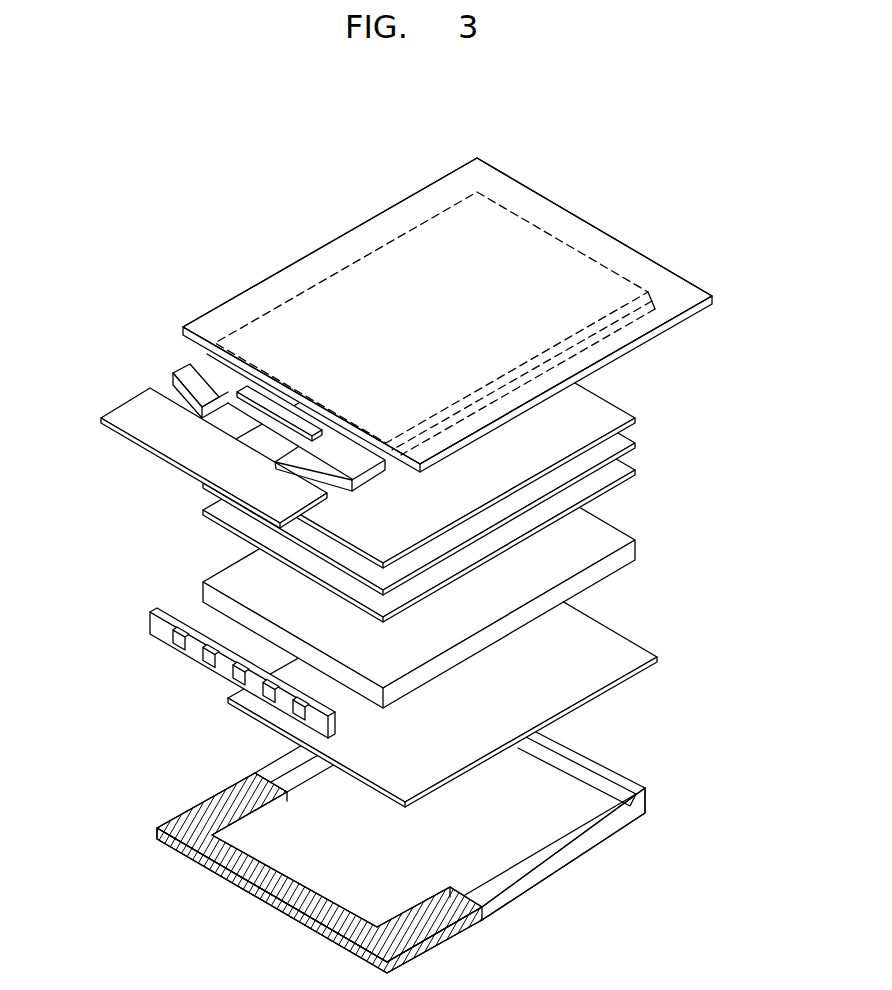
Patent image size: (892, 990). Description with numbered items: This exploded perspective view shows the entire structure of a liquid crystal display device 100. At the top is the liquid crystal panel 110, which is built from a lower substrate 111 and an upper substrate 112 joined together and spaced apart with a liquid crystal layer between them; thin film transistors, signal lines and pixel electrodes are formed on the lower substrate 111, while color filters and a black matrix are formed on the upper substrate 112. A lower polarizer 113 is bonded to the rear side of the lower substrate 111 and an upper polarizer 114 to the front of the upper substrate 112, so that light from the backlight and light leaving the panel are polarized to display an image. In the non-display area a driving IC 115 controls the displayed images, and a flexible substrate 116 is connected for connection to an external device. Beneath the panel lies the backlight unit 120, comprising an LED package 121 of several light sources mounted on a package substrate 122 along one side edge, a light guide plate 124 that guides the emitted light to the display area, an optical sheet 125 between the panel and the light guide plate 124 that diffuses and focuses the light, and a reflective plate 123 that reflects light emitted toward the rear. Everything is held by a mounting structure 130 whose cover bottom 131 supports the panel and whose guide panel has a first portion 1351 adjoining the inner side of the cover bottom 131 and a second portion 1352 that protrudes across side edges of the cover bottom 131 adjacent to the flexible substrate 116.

The display device 100 is at (616, 141).
The liquid crystal panel 110 is at (498, 315).
The lower substrate 111 is at (655, 308).
The upper substrate 112 is at (652, 300).
The lower polarizer 113 is at (586, 382).
The upper polarizer 114 is at (665, 268).
The driving IC 115 is at (178, 374).
The flexible substrate 116 is at (142, 400).
The backlight unit 120 is at (334, 560).
The LED package 121 is at (196, 673).
The package substrate 122 is at (172, 633).
The reflective plate 123 is at (228, 700).
The light guide plate 124 is at (203, 592).
The optical sheet 125 is at (346, 467).
The mounting structure 130 is at (404, 855).
The cover bottom 131 is at (636, 811).
The first portion 1351 is at (603, 797).
The second portion 1352 is at (484, 909).